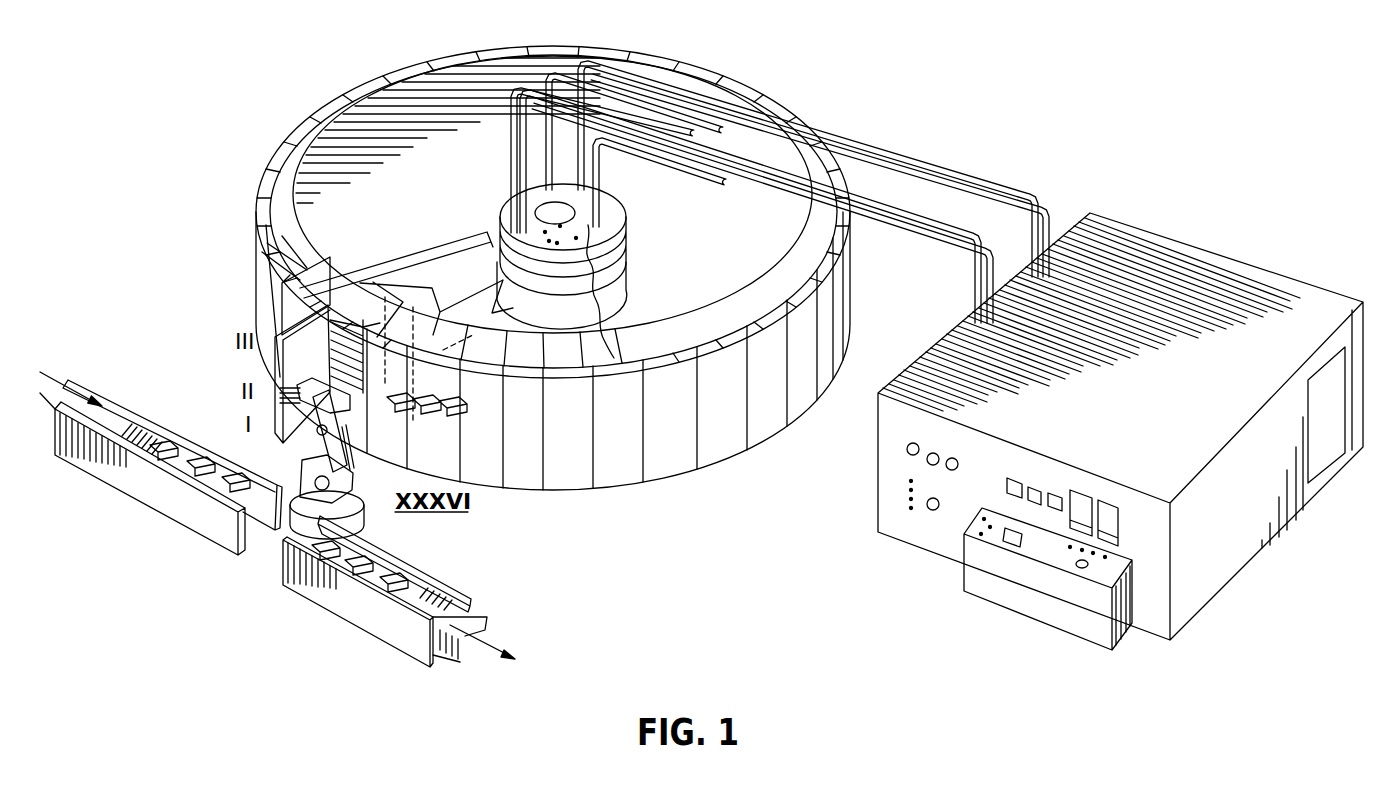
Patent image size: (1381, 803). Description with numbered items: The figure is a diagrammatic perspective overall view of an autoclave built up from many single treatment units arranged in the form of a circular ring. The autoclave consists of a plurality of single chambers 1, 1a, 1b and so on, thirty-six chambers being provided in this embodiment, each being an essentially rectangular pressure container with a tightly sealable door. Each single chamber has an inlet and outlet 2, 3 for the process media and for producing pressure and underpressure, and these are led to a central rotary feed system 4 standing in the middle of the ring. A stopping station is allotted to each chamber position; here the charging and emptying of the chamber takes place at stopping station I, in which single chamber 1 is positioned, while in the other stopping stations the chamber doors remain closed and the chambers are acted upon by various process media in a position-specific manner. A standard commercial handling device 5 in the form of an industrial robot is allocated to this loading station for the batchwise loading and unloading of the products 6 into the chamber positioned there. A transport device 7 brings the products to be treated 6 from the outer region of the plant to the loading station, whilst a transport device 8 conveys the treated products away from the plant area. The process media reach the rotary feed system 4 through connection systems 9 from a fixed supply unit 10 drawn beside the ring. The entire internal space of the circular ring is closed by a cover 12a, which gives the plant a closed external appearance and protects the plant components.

The single chamber 1 is at (280, 362).
The single chamber 1a is at (282, 300).
The single chamber 1b is at (262, 243).
The inlet 2 is at (458, 290).
The outlet 3 is at (513, 305).
The central rotary feed system 4 is at (507, 207).
The handling device 5 is at (352, 492).
The products 6 is at (460, 403).
The transport device 7 is at (197, 503).
The transport device 8 is at (340, 603).
The connection systems 9 is at (926, 137).
The supply unit 10 is at (913, 519).
The cover 12a is at (714, 289).